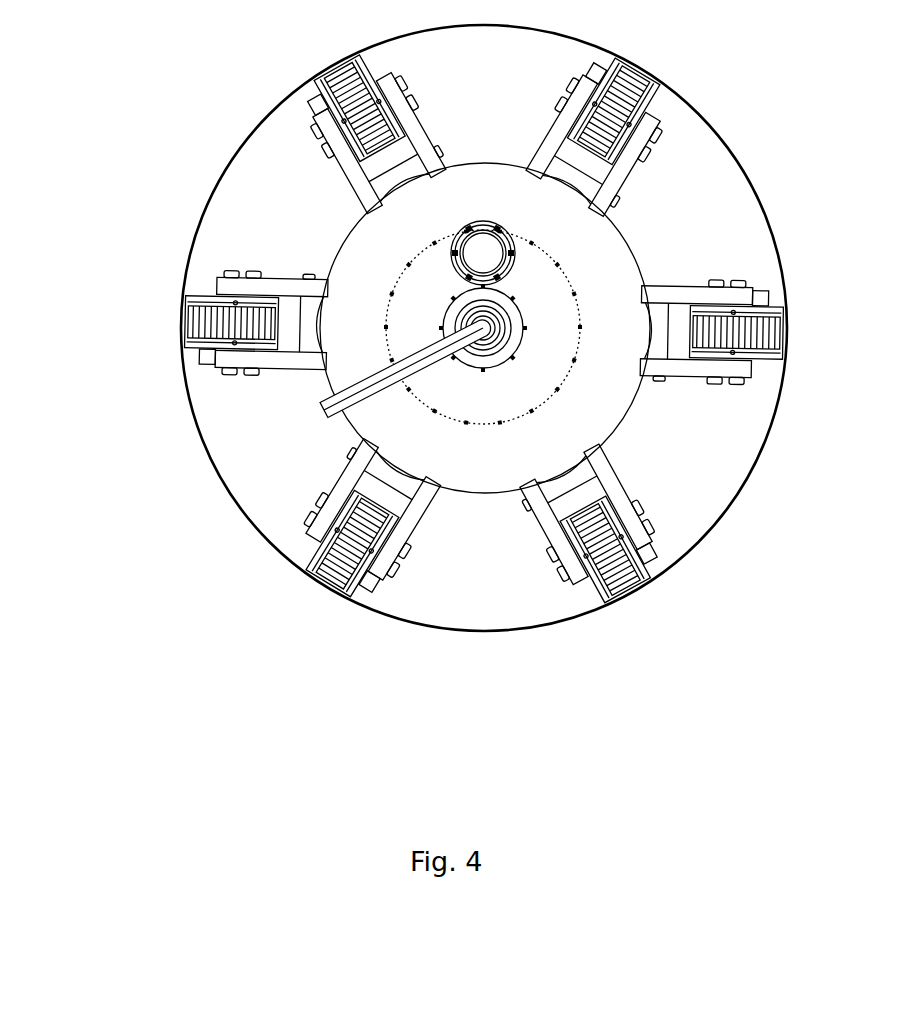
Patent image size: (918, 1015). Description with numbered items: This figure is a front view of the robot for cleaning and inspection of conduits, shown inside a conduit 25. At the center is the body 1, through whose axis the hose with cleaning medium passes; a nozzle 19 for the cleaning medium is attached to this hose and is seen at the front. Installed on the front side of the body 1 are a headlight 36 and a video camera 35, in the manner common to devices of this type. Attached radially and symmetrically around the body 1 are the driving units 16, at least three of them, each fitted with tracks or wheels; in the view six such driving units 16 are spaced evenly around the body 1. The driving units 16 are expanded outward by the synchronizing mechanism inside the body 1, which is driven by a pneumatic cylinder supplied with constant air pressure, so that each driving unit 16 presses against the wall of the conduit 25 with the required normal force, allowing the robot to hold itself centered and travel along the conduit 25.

The body 1 is at (340, 328).
The driving unit 16 is at (243, 108).
The nozzle for cleaning medium 19 is at (260, 391).
The conduit 25 is at (408, 328).
The video camera 35 is at (275, 193).
The headlight 36 is at (306, 316).